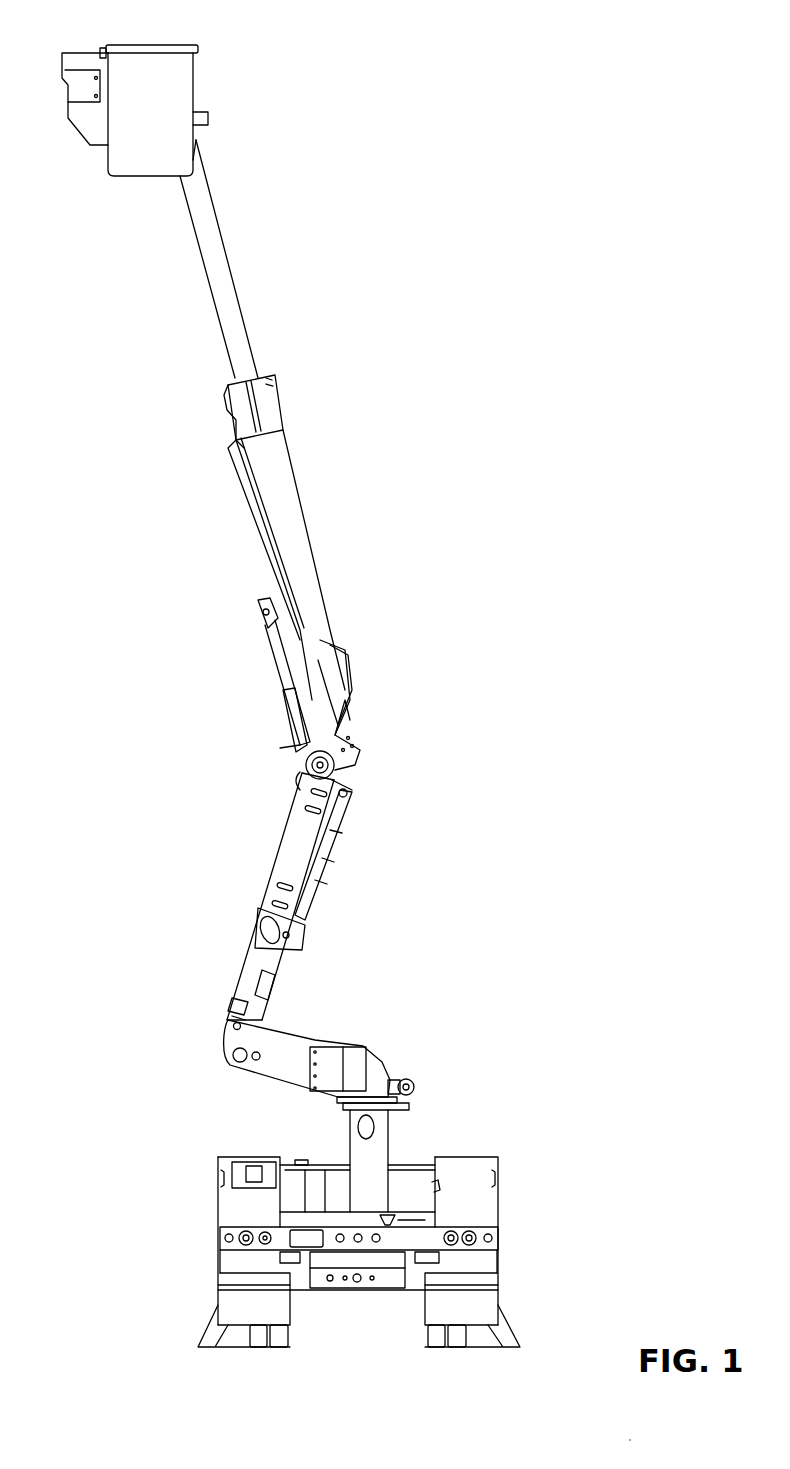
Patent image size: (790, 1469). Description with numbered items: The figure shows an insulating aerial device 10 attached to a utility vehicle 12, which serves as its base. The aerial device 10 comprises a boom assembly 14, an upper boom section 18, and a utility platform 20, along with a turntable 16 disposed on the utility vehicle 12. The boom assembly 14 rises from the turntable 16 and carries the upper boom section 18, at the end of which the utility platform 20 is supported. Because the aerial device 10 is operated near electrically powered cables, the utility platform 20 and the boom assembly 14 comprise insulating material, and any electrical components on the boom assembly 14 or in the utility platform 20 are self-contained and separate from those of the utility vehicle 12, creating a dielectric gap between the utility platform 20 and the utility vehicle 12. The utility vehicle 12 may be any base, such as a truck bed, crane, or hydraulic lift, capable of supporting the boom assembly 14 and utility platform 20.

The aerial device 10 is at (322, 96).
The utility vehicle 12 is at (180, 1207).
The boom assembly 14 is at (385, 663).
The turntable 16 is at (412, 1098).
The upper boom section 18 is at (248, 176).
The utility platform 20 is at (101, 30).